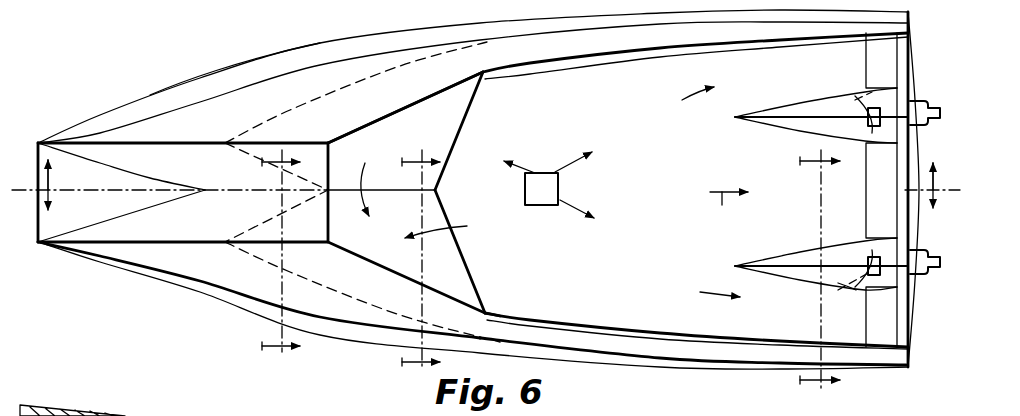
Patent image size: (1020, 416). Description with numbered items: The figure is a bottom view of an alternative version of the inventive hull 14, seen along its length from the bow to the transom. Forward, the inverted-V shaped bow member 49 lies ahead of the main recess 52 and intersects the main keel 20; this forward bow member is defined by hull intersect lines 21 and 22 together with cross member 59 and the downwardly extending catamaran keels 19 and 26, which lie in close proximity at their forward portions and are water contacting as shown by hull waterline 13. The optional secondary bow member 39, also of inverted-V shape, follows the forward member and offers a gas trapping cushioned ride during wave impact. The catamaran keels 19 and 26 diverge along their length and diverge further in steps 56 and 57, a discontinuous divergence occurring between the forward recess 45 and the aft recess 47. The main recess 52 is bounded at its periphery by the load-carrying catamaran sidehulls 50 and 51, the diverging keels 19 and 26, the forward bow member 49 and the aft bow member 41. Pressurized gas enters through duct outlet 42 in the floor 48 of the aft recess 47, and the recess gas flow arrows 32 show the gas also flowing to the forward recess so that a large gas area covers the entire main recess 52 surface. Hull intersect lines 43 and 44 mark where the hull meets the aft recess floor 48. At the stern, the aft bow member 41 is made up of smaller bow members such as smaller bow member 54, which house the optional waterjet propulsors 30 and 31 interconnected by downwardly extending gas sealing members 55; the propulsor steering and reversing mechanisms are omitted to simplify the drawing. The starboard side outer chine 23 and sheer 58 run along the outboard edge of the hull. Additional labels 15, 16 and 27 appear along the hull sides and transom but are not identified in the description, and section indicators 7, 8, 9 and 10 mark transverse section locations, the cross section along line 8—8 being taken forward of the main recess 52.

The hull waterline 13 is at (288, 108).
The hull 14 is at (235, 69).
The gunwale 15 is at (465, 12).
The sheer line 16 is at (396, 49).
The catamaran keel 19 is at (172, 143).
The main keel 20 is at (229, 190).
The hull intersect line 21 is at (160, 178).
The hull intersect line 22 is at (105, 192).
The starboard side outer chine 23 is at (690, 366).
The catamaran keel 26 is at (193, 243).
The transom 27 is at (885, 108).
The waterjet propulsor 30 is at (926, 110).
The waterjet propulsor 31 is at (921, 278).
The recess gas flow arrows 32 is at (370, 180).
The secondary bow member 39 is at (421, 251).
The aft bow member 41 is at (822, 103).
The duct outlet 42 is at (546, 186).
The hull intersect line 43 is at (430, 96).
The hull intersect line 44 is at (433, 292).
The forward recess 45 is at (419, 131).
The aft recess 47 is at (693, 269).
The aft recess floor 48 is at (680, 124).
The inverted-V shaped bow member 49 is at (183, 192).
The load-carrying catamaran sidehull 50 is at (402, 107).
The load-carrying catamaran sidehull 51 is at (406, 277).
The main recess 52 is at (586, 250).
The smaller bow member 54 is at (838, 283).
The gas sealing member 55 is at (868, 53).
The step 56 is at (486, 82).
The step 57 is at (484, 310).
The sheer 58 is at (674, 370).
The cross member 59 is at (88, 182).
The section line 7- 7 is at (504, 175).
The section line 8— 8 is at (289, 263).
The section line 9- 9 is at (416, 263).
The section line 10- 10 is at (810, 275).